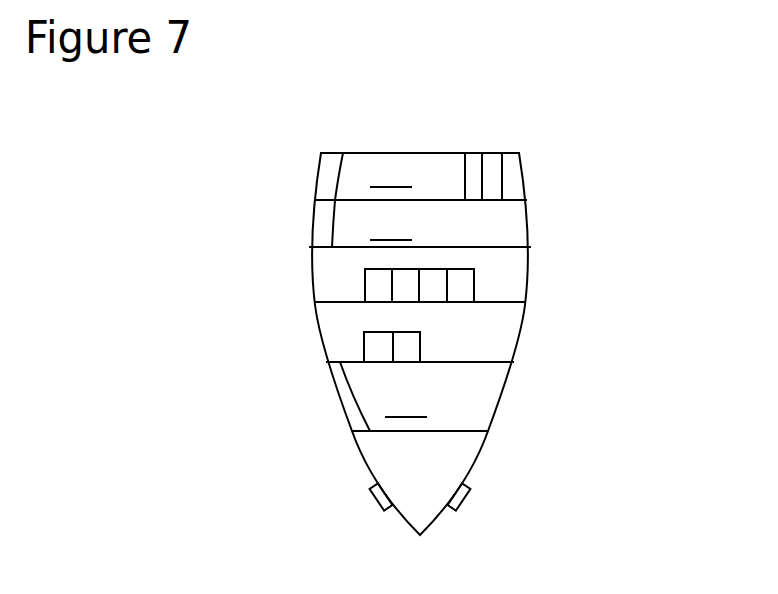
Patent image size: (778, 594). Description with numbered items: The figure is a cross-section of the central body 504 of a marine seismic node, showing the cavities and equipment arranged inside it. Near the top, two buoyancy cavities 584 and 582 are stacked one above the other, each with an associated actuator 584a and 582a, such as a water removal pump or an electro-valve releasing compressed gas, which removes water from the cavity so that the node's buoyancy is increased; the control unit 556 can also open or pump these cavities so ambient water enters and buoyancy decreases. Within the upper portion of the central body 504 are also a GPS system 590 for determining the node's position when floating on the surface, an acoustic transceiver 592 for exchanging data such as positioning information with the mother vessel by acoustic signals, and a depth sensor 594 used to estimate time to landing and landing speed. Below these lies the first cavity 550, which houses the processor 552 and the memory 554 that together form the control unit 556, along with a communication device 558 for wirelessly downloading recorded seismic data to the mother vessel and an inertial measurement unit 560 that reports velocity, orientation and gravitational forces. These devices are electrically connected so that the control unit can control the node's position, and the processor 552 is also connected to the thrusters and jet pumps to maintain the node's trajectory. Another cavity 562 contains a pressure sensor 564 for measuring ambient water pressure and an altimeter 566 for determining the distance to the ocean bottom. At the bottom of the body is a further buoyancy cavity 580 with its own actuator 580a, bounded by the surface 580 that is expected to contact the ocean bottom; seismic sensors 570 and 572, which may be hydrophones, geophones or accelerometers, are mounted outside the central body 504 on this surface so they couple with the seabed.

The central body 504 is at (186, 159).
The cavity 584 is at (420, 178).
The actuator 584a is at (328, 173).
The cavity 582 is at (420, 228).
The actuator 582a is at (320, 219).
The GPS system 590 is at (515, 180).
The acoustic transceiver 592 is at (490, 162).
The depth sensor 594 is at (476, 170).
The first cavity 550 is at (497, 275).
The processor 552 is at (381, 287).
The memory 554 is at (343, 337).
The control unit 556 is at (213, 266).
The communication device 558 is at (430, 288).
The inertial measurement unit 560 is at (463, 288).
The cavity 562 is at (408, 287).
The pressure sensor 564 is at (375, 348).
The altimeter 566 is at (410, 347).
The surface 580 is at (488, 434).
The actuator 580a is at (352, 415).
The seismic sensor 570 is at (376, 499).
The seismic sensor 572 is at (462, 499).